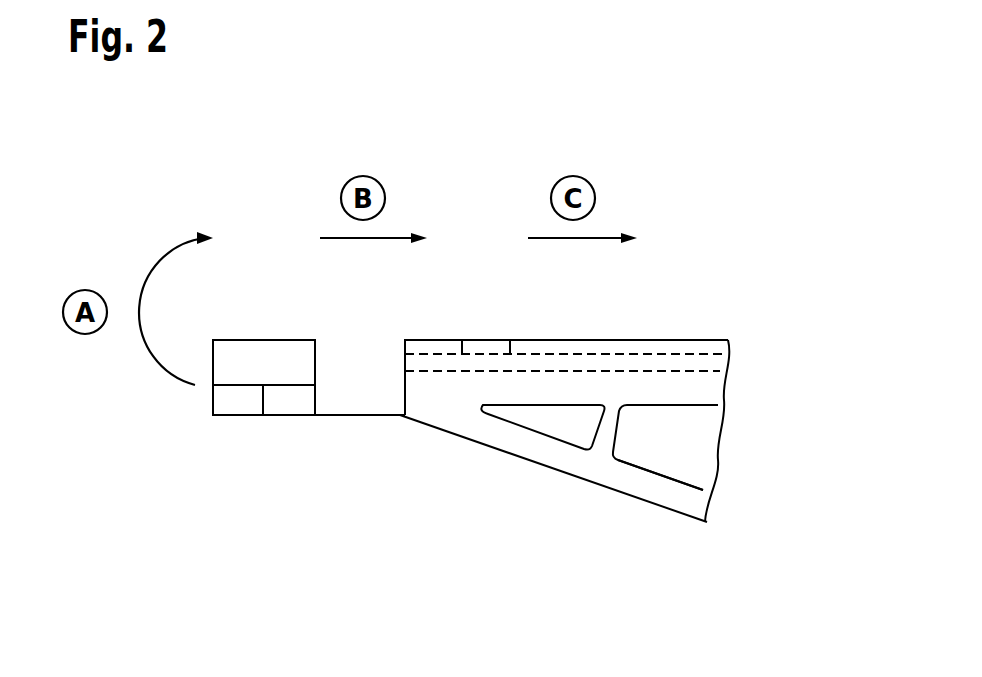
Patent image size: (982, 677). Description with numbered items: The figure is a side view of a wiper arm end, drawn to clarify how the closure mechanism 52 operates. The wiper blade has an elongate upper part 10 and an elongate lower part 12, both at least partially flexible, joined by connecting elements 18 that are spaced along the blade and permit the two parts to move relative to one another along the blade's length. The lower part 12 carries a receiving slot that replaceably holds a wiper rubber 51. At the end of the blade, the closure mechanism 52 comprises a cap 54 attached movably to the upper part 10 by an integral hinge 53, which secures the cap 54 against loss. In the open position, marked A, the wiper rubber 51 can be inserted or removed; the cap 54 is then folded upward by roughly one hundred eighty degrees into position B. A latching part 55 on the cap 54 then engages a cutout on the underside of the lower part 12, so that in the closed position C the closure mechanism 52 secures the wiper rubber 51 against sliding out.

The upper part 10 is at (650, 487).
The lower part 12 is at (692, 393).
The connecting element 18 is at (607, 430).
The wiper rubber 51 is at (688, 347).
The closure mechanism 52 is at (213, 523).
The hinge 53 is at (351, 417).
The cap 54 is at (239, 405).
The latching part 55 is at (254, 360).